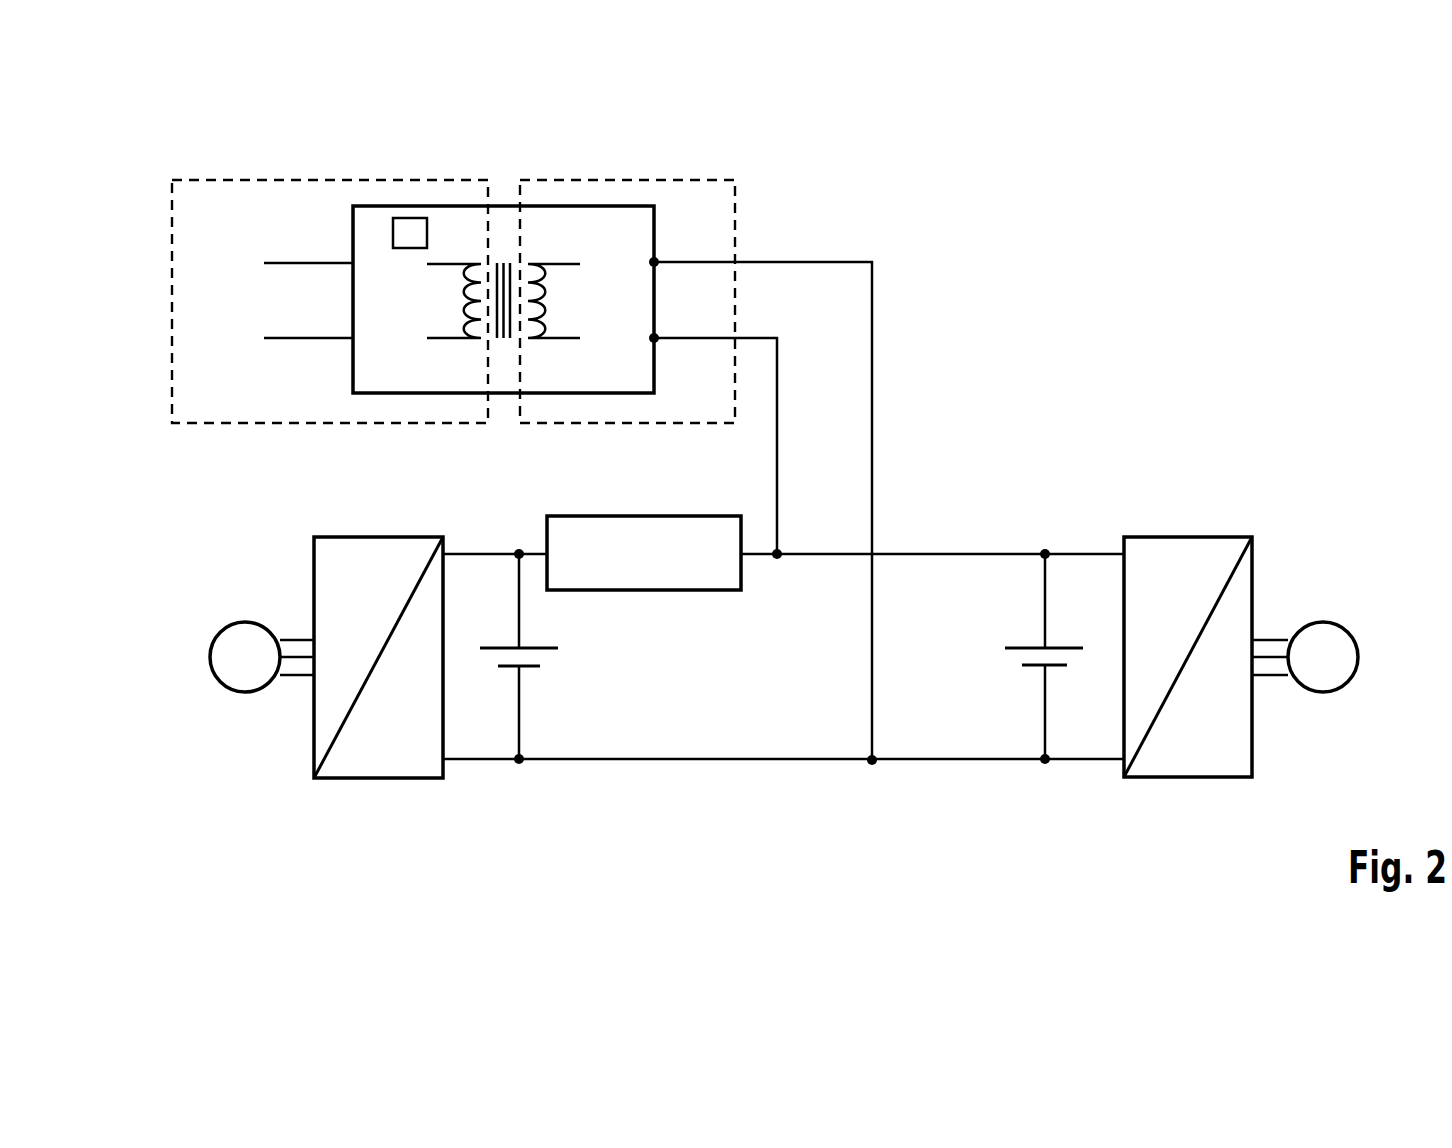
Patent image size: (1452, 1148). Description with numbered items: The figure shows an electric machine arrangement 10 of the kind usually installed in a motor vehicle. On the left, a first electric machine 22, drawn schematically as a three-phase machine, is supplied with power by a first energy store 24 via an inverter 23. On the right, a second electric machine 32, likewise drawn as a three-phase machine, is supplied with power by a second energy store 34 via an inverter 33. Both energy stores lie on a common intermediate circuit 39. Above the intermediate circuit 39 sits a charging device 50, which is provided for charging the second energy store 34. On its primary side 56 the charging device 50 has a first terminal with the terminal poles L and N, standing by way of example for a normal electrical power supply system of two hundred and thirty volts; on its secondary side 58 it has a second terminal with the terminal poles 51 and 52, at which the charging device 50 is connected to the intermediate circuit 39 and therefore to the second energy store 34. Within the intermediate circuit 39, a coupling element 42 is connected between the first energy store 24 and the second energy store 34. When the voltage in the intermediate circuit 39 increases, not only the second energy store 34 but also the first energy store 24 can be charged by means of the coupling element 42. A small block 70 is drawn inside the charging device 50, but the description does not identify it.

The electric machine arrangement 10 is at (993, 278).
The first electric machine 22 is at (210, 657).
The inverter 23 is at (393, 537).
The first energy store 24 is at (509, 667).
The second electric machine 32 is at (1358, 657).
The inverter 33 is at (1158, 777).
The second energy store 34 is at (1037, 667).
The intermediate circuit 39 is at (908, 554).
The coupling element 42 is at (623, 516).
The charging device 50 is at (506, 206).
The terminal pole 51 is at (657, 259).
The terminal pole 52 is at (657, 335).
The primary side 56 is at (295, 180).
The secondary side 58 is at (662, 180).
The control unit 70 is at (410, 218).